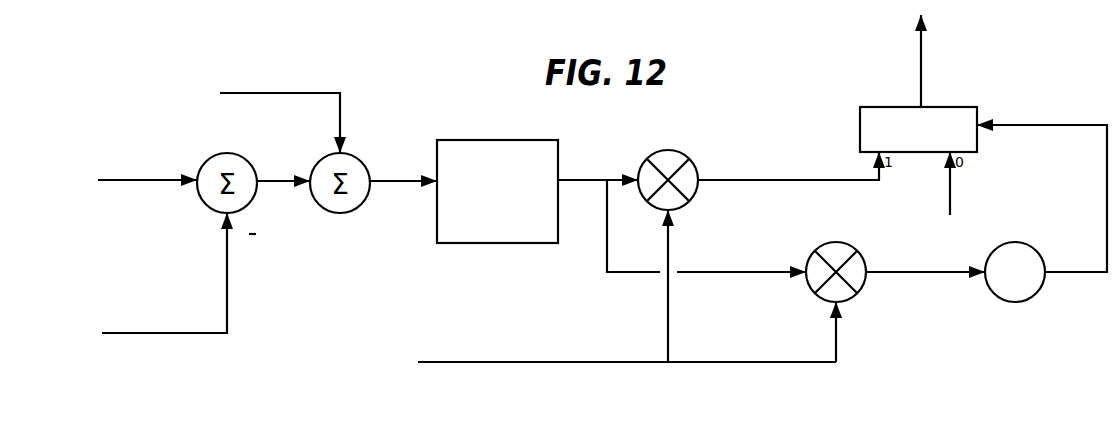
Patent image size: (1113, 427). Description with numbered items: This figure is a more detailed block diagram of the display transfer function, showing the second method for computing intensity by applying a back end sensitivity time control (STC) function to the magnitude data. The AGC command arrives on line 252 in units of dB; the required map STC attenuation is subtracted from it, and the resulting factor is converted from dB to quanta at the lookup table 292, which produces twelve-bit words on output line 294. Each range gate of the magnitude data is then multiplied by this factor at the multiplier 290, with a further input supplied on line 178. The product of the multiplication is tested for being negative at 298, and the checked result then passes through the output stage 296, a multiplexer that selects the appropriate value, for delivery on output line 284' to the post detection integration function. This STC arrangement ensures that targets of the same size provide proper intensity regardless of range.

The AGC command line 252 is at (168, 178).
The lookup table 292 is at (505, 140).
The output line 294 is at (598, 178).
The multiplier 290 is at (810, 252).
The signal line 178 is at (538, 362).
The output stage 296 is at (955, 107).
The output line 284' is at (881, 61).
The negative test 298 is at (1027, 243).